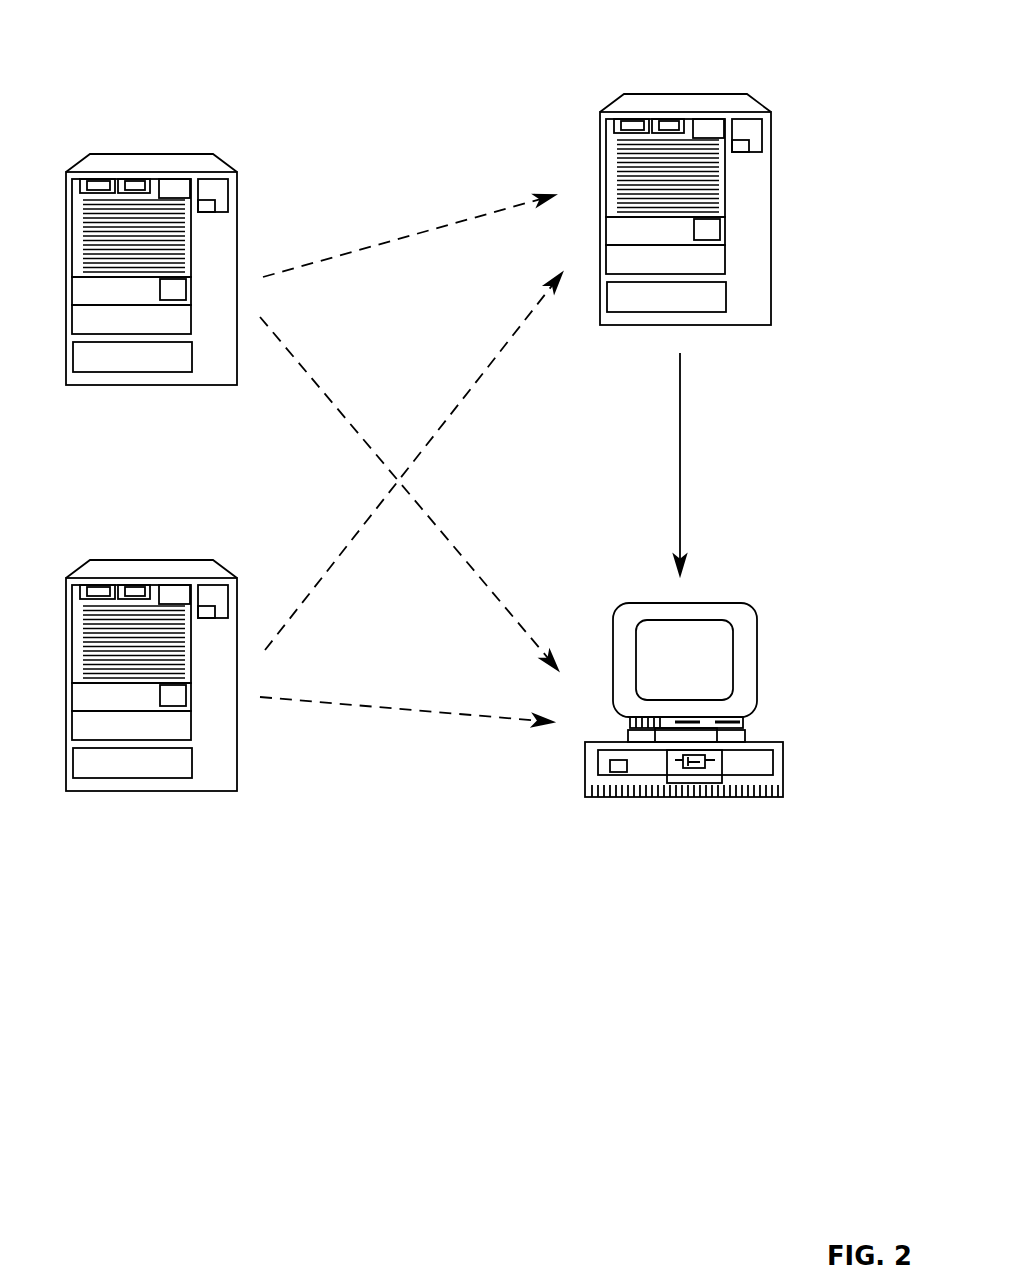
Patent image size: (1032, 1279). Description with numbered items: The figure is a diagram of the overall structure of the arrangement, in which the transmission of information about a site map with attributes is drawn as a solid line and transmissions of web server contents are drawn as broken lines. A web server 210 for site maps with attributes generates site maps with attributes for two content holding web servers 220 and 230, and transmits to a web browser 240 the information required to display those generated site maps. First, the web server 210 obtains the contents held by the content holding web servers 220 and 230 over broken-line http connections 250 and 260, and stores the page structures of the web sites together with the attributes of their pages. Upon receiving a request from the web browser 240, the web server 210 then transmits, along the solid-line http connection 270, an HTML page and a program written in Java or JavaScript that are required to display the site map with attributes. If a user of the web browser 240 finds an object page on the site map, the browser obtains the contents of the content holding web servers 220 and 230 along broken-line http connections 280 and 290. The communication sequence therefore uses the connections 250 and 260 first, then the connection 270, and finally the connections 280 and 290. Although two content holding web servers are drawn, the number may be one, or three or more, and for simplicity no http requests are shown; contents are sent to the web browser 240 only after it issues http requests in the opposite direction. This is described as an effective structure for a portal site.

The web server for site maps with attributes 210 is at (772, 271).
The content holding web server 220 is at (138, 153).
The content holding web server 230 is at (138, 560).
The web browser 240 is at (757, 680).
The http connection 250 is at (430, 232).
The http connection 260 is at (487, 373).
The http connection 270 is at (680, 442).
The http connection 280 is at (442, 533).
The http connection 290 is at (407, 707).